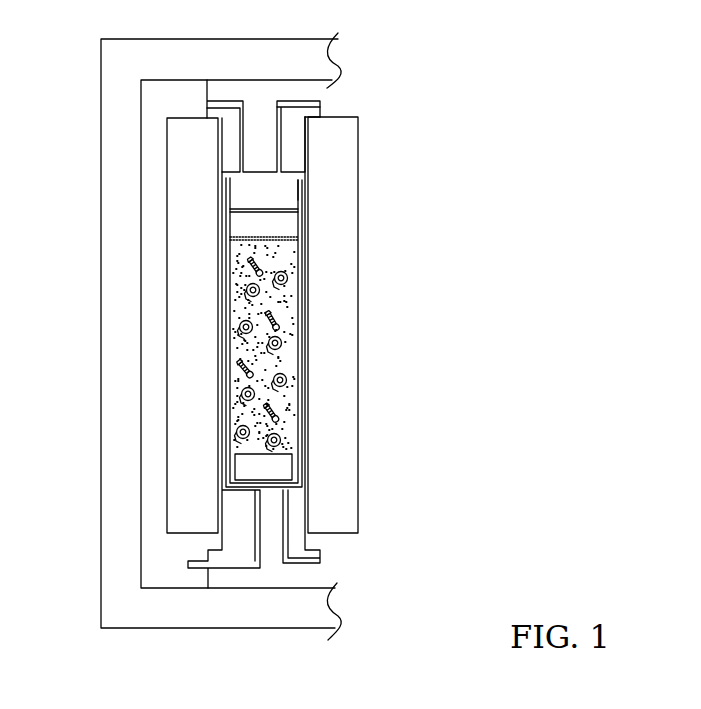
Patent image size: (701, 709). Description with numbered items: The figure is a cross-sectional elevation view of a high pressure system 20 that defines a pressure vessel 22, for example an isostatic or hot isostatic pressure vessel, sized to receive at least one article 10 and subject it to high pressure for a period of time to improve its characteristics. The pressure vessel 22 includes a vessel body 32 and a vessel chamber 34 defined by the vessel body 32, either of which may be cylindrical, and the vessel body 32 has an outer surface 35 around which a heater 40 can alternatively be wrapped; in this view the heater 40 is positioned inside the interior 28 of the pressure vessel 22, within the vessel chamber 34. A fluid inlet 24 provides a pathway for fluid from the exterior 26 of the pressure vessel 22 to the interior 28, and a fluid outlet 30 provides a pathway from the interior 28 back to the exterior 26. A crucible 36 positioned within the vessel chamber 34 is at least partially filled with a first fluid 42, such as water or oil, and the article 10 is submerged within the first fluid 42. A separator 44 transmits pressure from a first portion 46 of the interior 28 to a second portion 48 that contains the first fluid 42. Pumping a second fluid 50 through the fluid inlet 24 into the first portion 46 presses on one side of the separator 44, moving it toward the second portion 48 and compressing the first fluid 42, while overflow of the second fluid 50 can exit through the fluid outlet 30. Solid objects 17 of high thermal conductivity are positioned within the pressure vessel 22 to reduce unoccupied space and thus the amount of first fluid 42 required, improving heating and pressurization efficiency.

The article 10 is at (240, 388).
The solid objects 17 is at (293, 380).
The high pressure system 20 is at (534, 100).
The pressure vessel 22 is at (372, 203).
The fluid inlet 24 is at (321, 103).
The exterior 26 is at (153, 98).
The interior 28 is at (238, 308).
The fluid outlet 30 is at (207, 101).
The vessel body 32 is at (340, 277).
The vessel chamber 34 is at (240, 185).
The outer surface 35 is at (168, 421).
The crucible 36 is at (300, 330).
The heater 40 is at (283, 465).
The first fluid 42 is at (240, 258).
The separator 44 is at (285, 221).
The first portion 46 is at (250, 193).
The second portion 48 is at (222, 439).
The second fluid 50 is at (300, 178).